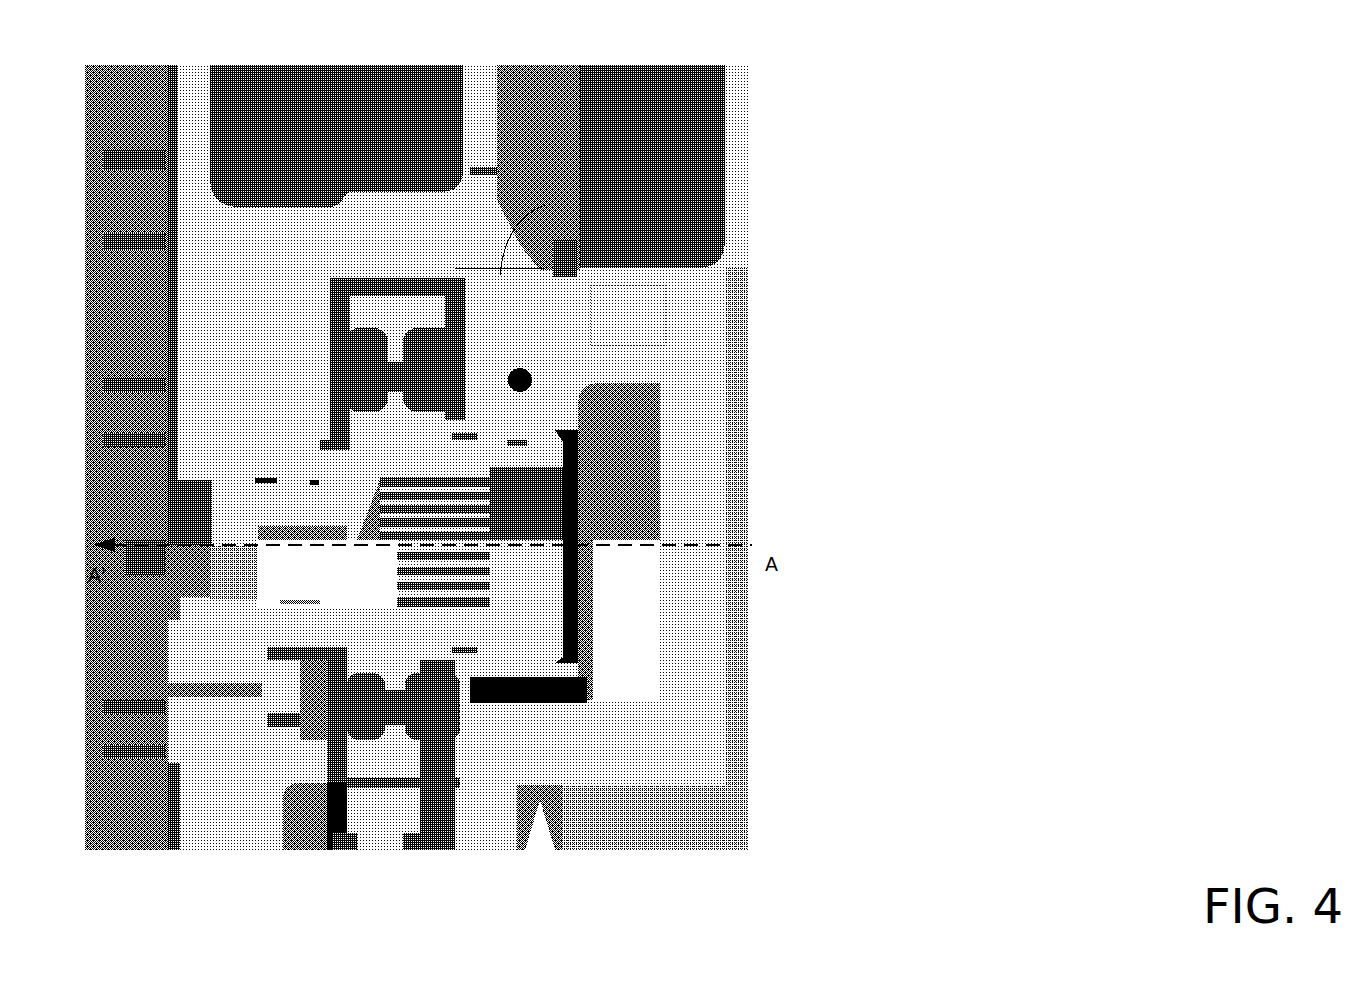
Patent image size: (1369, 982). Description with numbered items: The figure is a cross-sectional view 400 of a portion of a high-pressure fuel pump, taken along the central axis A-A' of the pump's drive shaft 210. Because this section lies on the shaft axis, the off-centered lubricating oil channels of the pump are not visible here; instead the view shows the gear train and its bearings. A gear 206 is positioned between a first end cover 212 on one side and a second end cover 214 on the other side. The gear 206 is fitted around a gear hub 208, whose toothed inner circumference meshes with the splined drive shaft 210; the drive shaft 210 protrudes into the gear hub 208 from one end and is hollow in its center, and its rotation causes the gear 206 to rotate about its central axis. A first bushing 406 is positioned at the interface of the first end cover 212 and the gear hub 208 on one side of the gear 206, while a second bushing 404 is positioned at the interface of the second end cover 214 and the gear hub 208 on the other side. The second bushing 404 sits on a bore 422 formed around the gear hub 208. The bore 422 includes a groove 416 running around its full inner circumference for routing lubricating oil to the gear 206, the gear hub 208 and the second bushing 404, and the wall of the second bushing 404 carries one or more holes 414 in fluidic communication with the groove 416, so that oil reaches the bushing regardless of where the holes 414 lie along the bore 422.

The cross-sectional view 400 is at (738, 40).
The second end cover 214 is at (200, 318).
The gear 206 is at (360, 345).
The drive shaft 210 is at (452, 497).
The first bushing 406 is at (497, 432).
The second bushing 404 is at (240, 480).
The holes 414 is at (267, 478).
The groove 416 is at (265, 609).
The bore 422 is at (300, 606).
The gear hub 208 is at (345, 598).
The first end cover 212 is at (614, 762).